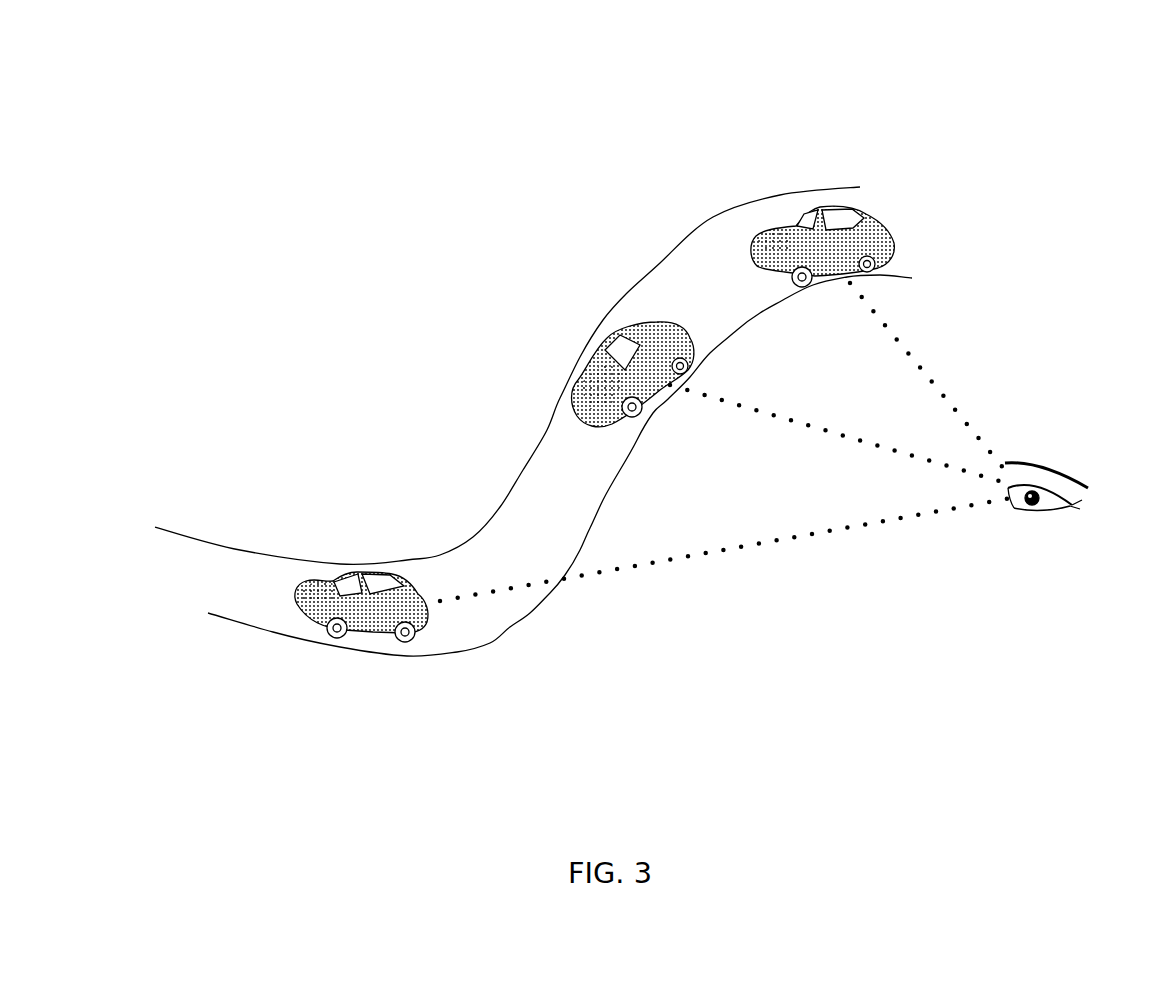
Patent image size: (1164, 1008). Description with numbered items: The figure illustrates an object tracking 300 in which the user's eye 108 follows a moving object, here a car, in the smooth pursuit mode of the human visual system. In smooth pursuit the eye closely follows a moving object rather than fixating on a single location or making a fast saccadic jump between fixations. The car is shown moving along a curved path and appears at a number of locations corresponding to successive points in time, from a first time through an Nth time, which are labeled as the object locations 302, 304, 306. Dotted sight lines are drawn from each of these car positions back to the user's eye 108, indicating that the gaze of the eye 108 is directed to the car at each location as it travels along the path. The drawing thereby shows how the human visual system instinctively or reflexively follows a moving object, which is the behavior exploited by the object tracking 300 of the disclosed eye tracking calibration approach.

The object tracking 300 is at (628, 60).
The object location at time t1 302 is at (712, 191).
The object location at time t2 304 is at (558, 336).
The object location at time tN 306 is at (350, 530).
The user's eye 108 is at (1131, 462).